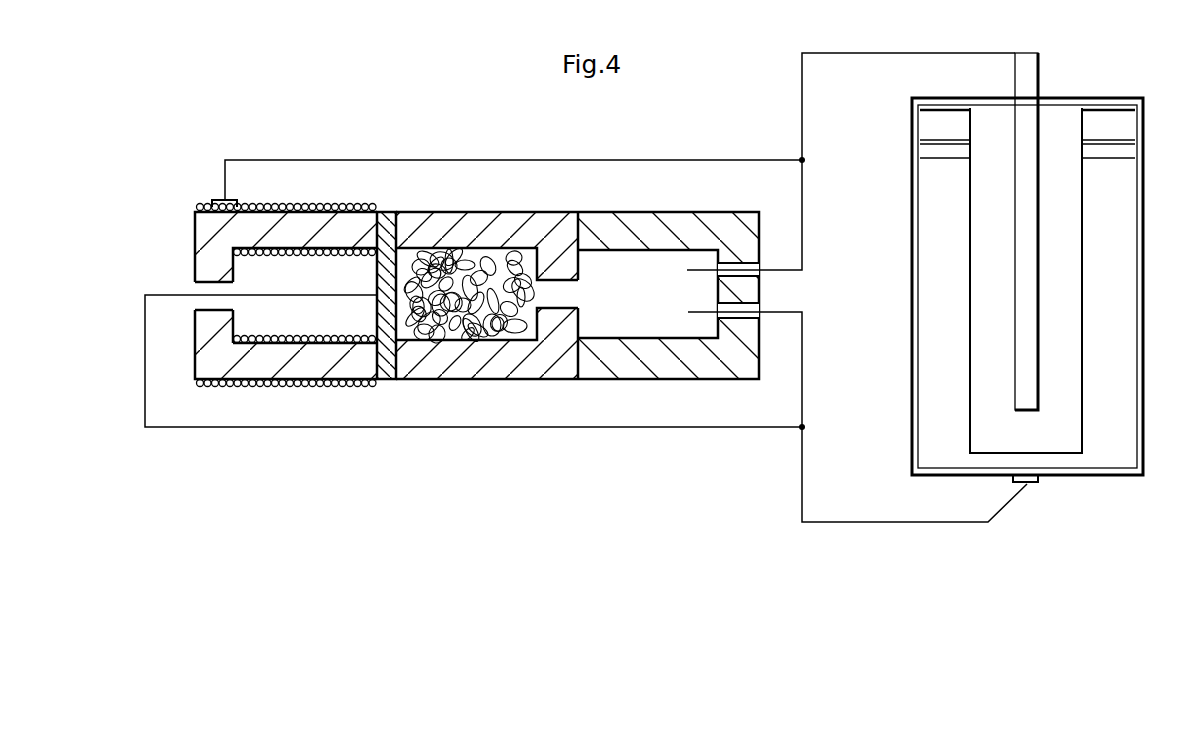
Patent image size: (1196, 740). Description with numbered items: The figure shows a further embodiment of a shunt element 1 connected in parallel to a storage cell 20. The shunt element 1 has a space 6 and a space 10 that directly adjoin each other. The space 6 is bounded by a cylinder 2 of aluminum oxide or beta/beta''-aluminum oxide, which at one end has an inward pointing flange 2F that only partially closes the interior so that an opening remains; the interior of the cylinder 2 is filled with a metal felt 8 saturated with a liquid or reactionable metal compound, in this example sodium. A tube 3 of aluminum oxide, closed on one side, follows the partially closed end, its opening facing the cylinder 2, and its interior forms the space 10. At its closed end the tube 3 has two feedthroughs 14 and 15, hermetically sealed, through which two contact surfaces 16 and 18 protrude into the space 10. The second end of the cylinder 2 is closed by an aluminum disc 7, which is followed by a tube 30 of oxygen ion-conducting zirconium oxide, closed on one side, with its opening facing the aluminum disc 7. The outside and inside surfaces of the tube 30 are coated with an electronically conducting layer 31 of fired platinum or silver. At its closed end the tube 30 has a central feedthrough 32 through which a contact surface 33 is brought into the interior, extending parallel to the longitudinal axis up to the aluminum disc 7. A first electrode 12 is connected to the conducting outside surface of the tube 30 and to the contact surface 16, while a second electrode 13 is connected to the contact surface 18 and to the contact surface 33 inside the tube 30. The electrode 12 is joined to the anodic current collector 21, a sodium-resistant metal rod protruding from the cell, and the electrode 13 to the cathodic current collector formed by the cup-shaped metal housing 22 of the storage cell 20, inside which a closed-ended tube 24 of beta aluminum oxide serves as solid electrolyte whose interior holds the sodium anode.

The shunt element 1 is at (191, 212).
The cylinder 2 is at (508, 367).
The inward pointing flange 2F is at (558, 373).
The tube 3 is at (607, 362).
The space 6 is at (432, 330).
The aluminum disc 7 is at (382, 228).
The metal felt 8 is at (437, 256).
The space 10 is at (606, 265).
The first electrode 12 is at (833, 53).
The second electrode 13 is at (854, 520).
The feedthrough 14 is at (739, 260).
The feedthrough 15 is at (747, 319).
The contact surface 16 is at (703, 270).
The contact surface 18 is at (712, 312).
The storage cell 20 is at (1143, 365).
The anodic current collector 21 is at (1032, 85).
The cup-shaped housing 22 is at (1047, 472).
The tube of beta aluminum oxide 24 is at (1083, 173).
The tube 30 is at (218, 357).
The electronically conducting layer 31 is at (292, 343).
The central feedthrough 32 is at (207, 281).
The contact surface 33 is at (172, 295).